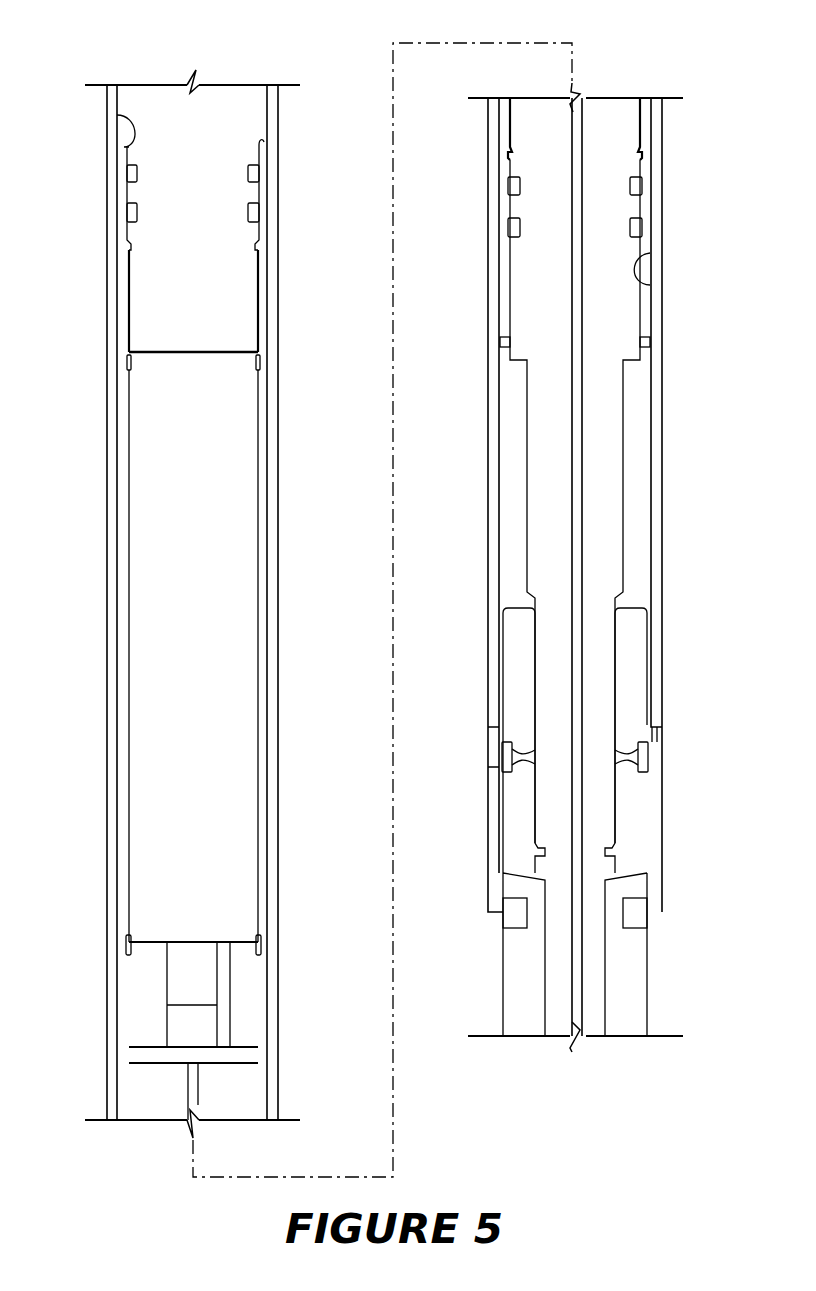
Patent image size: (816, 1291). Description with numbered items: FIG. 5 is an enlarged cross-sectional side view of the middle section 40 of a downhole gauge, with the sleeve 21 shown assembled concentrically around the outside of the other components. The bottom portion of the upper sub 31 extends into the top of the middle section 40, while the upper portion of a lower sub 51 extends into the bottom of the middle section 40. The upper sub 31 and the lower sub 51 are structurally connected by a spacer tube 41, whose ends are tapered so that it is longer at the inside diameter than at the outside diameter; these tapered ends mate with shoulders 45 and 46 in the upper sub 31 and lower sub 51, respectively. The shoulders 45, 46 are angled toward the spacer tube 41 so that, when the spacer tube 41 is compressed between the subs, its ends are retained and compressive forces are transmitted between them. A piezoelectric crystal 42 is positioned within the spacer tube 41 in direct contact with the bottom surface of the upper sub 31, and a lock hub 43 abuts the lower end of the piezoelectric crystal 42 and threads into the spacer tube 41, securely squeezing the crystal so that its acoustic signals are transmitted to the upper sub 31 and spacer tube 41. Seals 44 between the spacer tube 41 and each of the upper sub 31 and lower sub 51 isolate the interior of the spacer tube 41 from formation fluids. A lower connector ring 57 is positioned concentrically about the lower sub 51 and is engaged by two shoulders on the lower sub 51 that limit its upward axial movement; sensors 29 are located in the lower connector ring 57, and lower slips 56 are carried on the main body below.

The sleeve 21 is at (272, 590).
The sensors 29 is at (655, 757).
The upper sub 31 is at (262, 118).
The middle section 40 is at (354, 533).
The spacer tube 41 is at (262, 384).
The piezoelectric crystal 42 is at (145, 596).
The lock hub 43 is at (138, 996).
The seals 44 is at (260, 212).
The shoulder 45 is at (118, 118).
The shoulder 46 is at (650, 285).
The lower sub 51 is at (597, 470).
The lower slips 56 is at (625, 975).
The lower connector ring 57 is at (138, 1088).